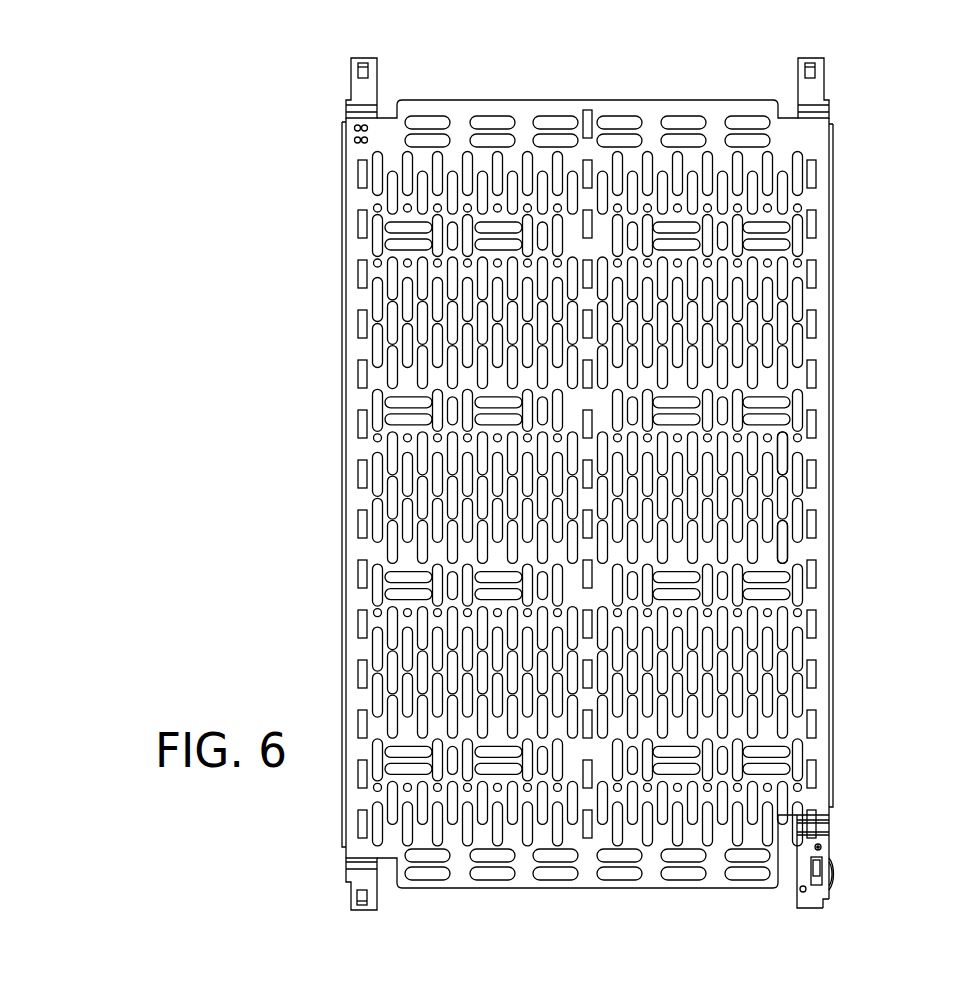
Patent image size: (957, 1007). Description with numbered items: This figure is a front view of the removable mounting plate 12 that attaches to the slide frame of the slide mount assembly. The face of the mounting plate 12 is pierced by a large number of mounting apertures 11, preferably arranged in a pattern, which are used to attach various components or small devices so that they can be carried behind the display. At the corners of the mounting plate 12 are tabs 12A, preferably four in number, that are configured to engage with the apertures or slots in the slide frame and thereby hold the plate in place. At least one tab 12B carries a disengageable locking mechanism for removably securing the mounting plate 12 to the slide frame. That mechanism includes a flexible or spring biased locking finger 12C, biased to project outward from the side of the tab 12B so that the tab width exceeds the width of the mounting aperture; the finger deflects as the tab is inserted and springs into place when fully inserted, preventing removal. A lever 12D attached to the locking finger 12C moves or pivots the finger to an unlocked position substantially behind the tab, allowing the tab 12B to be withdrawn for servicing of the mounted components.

The mounting apertures 11 is at (785, 447).
The mounting plate 12 is at (605, 488).
The tabs 12A is at (299, 905).
The tab 12B is at (832, 845).
The locking finger 12C is at (826, 900).
The lever 12D is at (832, 887).